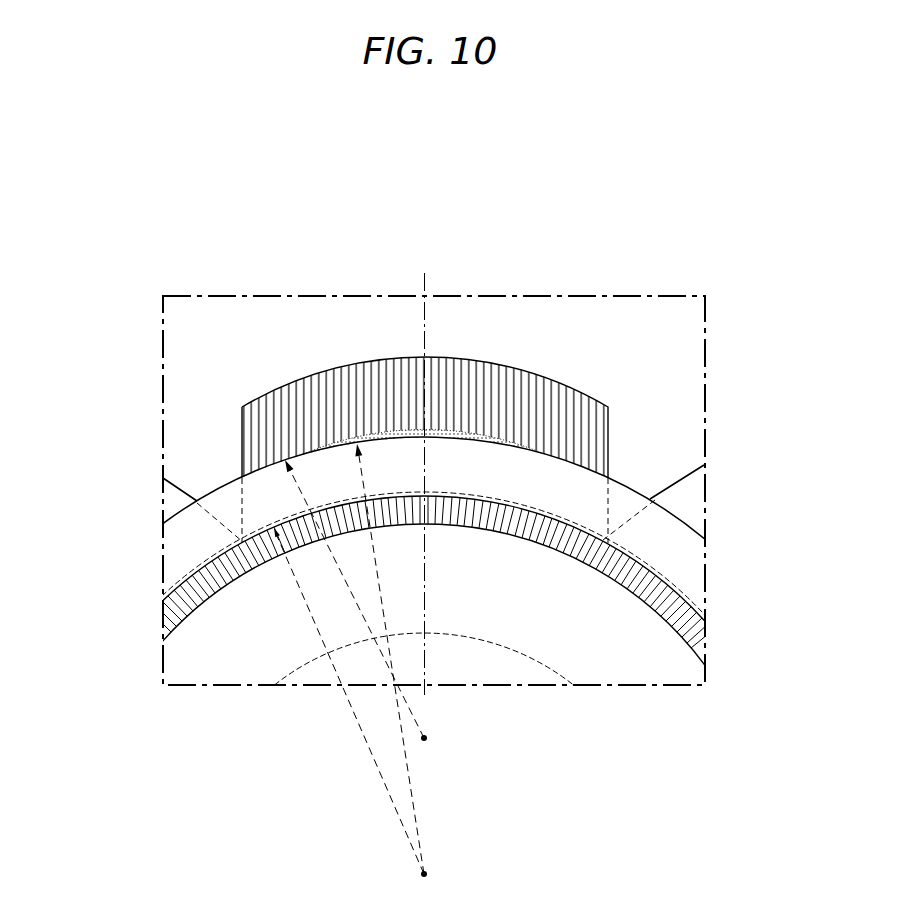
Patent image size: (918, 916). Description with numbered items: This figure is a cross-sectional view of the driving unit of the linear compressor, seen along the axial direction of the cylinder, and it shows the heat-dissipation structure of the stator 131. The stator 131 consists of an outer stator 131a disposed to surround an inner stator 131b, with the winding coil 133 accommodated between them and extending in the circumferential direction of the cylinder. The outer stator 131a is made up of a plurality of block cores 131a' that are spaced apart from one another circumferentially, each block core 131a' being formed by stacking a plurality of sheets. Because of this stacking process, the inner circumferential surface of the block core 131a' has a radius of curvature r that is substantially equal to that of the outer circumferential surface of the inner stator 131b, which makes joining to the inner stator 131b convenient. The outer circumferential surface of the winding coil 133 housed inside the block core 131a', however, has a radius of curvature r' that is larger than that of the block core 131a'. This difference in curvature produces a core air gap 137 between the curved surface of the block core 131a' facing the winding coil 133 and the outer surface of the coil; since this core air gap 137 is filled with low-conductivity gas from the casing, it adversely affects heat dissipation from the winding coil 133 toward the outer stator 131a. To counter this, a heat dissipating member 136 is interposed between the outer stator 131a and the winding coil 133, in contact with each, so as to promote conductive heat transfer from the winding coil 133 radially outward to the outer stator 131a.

The stator 131 is at (516, 235).
The outer stator 131a is at (425, 358).
The inner stator 131b is at (563, 520).
The block core 131a' is at (436, 390).
The winding coil 133 is at (622, 498).
The heat dissipating member 136 is at (460, 436).
The core air gap 137 is at (298, 447).
The radius of curvature r is at (350, 667).
The radius of curvature r' is at (420, 660).